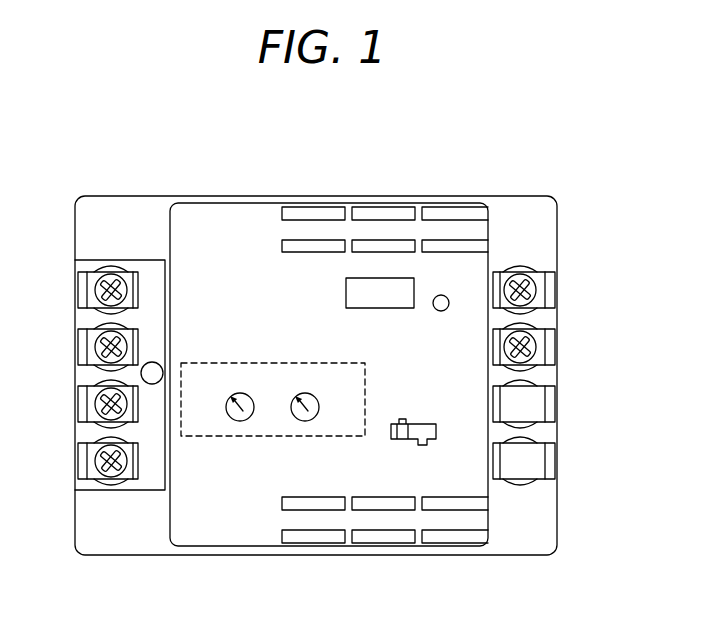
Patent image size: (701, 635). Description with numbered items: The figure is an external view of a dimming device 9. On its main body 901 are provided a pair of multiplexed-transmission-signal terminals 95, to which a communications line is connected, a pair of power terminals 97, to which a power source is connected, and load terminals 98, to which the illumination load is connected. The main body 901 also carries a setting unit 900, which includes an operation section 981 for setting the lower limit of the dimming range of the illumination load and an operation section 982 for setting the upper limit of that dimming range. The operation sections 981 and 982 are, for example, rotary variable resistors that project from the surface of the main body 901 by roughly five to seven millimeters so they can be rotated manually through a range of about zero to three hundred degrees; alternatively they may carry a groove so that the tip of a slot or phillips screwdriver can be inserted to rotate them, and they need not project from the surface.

The dimming device 9 is at (509, 196).
The main body 901 is at (546, 217).
The multiplexed-transmission-signal terminals 95 is at (536, 290).
The power terminals 97 is at (95, 290).
The load terminals 98 is at (95, 404).
The setting unit 900 is at (266, 363).
The operation section 981 is at (238, 422).
The operation section 982 is at (303, 422).